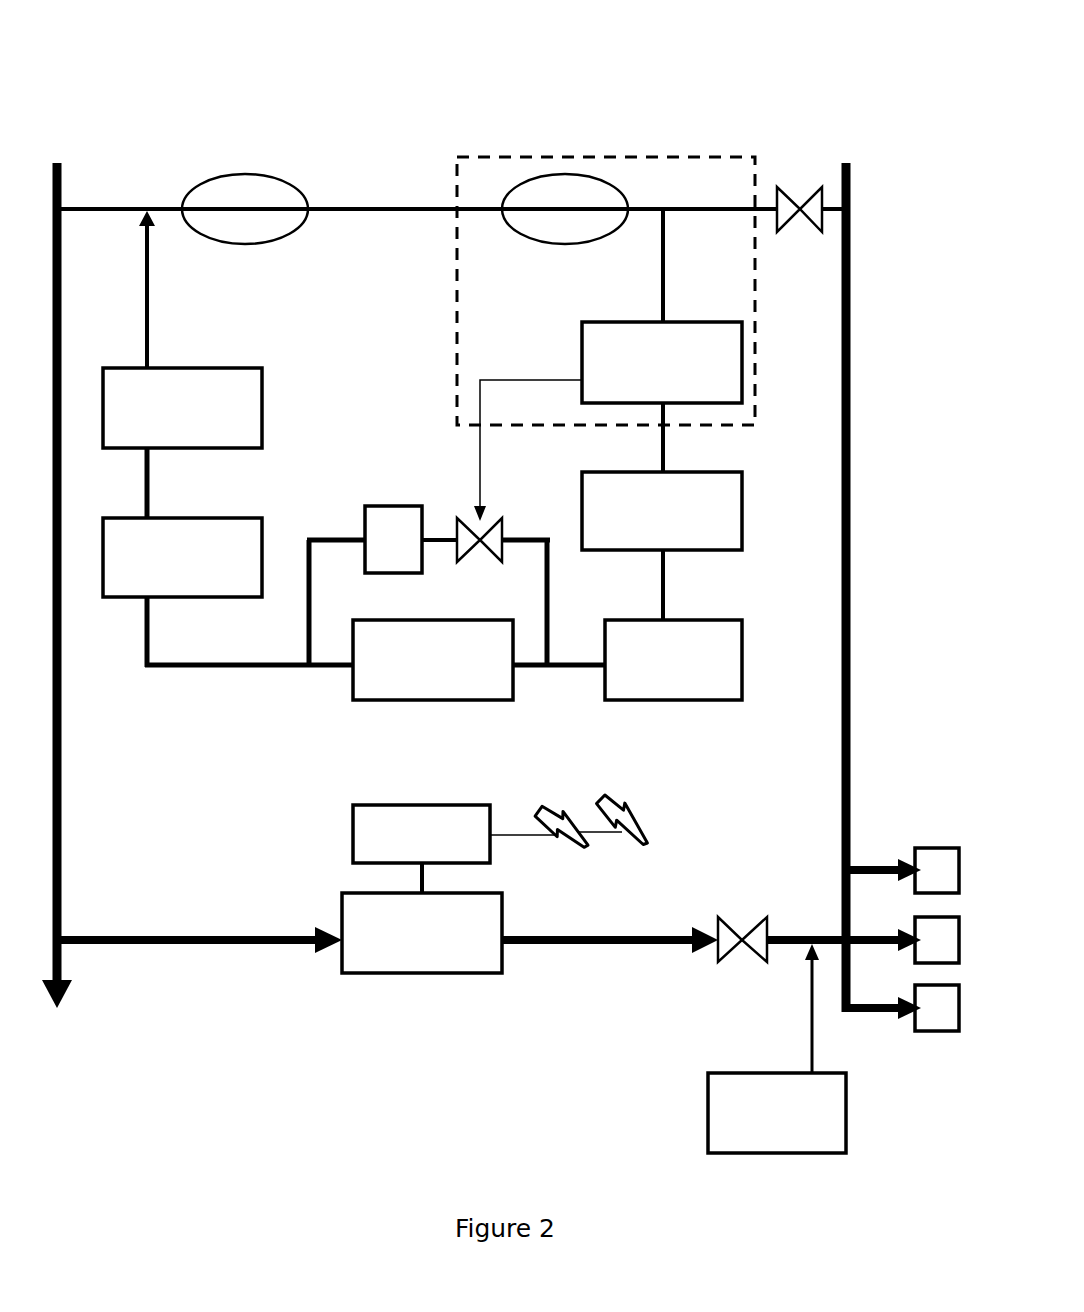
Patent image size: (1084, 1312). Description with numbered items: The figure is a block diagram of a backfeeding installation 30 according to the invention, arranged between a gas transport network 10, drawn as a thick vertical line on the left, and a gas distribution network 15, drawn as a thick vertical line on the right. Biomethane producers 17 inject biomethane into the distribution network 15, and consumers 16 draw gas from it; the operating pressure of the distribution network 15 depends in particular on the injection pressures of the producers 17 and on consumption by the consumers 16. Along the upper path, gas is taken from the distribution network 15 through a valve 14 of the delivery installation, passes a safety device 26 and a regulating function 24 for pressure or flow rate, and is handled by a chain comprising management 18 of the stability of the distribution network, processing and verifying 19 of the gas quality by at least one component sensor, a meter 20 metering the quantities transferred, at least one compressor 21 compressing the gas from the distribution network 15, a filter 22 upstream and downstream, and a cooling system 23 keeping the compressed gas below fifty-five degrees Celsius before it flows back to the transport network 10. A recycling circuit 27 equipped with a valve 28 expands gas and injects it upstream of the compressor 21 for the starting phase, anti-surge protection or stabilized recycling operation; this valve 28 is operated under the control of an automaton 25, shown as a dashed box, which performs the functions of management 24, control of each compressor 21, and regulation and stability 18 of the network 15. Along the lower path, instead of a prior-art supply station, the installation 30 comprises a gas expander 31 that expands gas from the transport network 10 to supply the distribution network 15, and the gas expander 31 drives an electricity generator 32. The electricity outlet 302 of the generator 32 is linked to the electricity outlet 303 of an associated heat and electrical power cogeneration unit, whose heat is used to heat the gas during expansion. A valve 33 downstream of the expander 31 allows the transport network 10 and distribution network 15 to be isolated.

The transport network 10 is at (62, 187).
The valve 14 is at (812, 205).
The distribution network 15 is at (850, 240).
The consumers 16 is at (938, 860).
The biomethane producers 17 is at (800, 1142).
The management of the stability of the operation of the distribution network 18 is at (730, 388).
The processing and verifying 19 is at (730, 512).
The meter 20 is at (640, 690).
The compressor 21 is at (400, 690).
The filter 22 is at (125, 585).
The cooling system 23 is at (252, 390).
The regulating the pressure or flow rate 24 is at (548, 235).
The automaton 25 is at (468, 300).
The safety devices 26 is at (274, 232).
The recycling circuit 27 is at (375, 528).
The valve 28 is at (470, 530).
The backfeeding installation 30 is at (593, 100).
The gas expander 31 is at (425, 965).
The electricity generator 32 is at (365, 842).
The electricity outlet of the generator 302 is at (577, 850).
The electricity outlet of the cogeneration unit 303 is at (640, 847).
The valve 33 is at (755, 935).